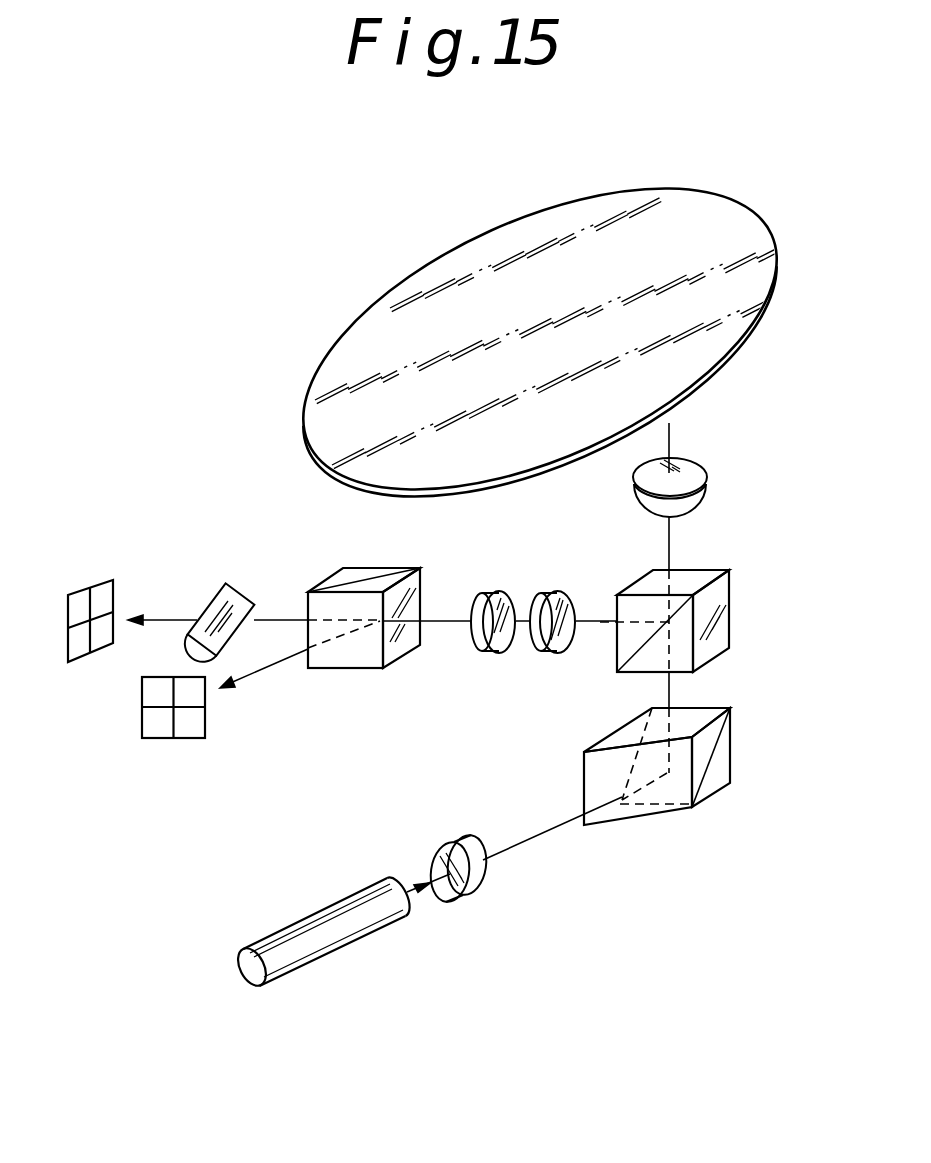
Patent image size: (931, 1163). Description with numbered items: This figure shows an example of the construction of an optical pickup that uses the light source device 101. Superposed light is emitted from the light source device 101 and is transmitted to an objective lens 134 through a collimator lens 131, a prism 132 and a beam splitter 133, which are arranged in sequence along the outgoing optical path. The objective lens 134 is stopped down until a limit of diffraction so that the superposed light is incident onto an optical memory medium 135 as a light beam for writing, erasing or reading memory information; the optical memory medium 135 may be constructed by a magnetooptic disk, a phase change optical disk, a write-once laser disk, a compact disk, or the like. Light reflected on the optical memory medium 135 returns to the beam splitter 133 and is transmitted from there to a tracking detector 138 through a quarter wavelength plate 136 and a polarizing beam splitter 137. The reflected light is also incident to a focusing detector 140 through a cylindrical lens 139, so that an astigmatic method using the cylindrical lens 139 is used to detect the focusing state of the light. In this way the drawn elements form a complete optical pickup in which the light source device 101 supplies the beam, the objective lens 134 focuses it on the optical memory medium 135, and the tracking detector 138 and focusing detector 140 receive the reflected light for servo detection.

The light source device 101 is at (343, 945).
The collimator lens 131 is at (466, 841).
The prism 132 is at (731, 742).
The beam splitter 133 is at (730, 594).
The objective lens 134 is at (708, 474).
The optical memory medium 135 is at (723, 198).
The 1/4 wavelength plate 136 is at (558, 590).
The polarizing beam splitter 137 is at (360, 568).
The tracking detector 138 is at (186, 740).
The cylindrical lens 139 is at (240, 592).
The focusing detector 140 is at (88, 582).